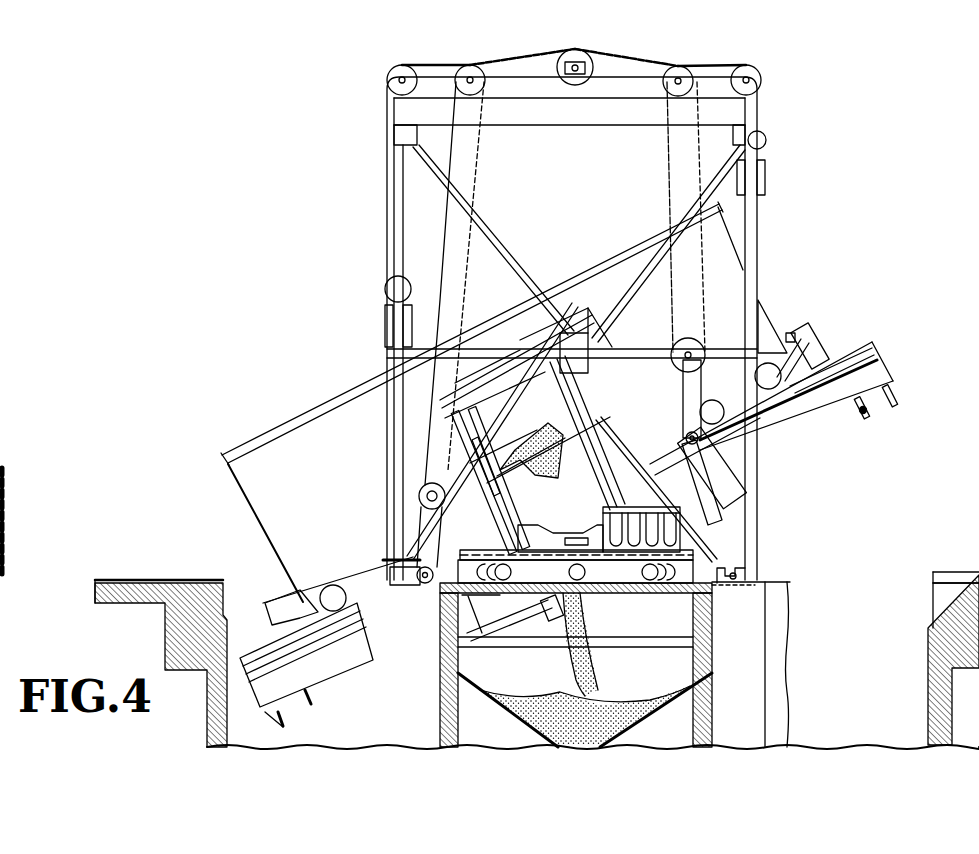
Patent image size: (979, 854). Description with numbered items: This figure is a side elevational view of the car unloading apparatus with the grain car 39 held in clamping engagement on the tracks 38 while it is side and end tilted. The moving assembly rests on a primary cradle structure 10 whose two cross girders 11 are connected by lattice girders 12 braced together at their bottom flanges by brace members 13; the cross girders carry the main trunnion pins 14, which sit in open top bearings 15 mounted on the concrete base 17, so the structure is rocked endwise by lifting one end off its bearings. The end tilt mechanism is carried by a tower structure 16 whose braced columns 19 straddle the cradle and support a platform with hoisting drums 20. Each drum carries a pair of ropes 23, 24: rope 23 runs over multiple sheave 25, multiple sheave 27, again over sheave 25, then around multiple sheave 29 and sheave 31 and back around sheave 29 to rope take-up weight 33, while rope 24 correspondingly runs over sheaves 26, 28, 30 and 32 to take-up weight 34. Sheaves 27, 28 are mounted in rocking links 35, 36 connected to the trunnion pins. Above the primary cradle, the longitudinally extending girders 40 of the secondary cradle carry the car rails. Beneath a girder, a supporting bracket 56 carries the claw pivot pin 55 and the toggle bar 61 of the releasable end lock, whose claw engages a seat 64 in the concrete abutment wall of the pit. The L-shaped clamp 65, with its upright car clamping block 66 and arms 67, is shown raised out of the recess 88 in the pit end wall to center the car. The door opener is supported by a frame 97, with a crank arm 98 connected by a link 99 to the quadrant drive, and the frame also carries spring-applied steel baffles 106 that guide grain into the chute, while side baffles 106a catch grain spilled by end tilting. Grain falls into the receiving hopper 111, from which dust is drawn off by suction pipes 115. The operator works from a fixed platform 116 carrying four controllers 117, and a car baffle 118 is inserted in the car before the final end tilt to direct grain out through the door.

The primary cradle structure 10 is at (512, 632).
The cross girder 11 is at (735, 485).
The lattice girder 12 is at (533, 628).
The brace member 13 is at (556, 622).
The main trunnion pin 14 is at (432, 585).
The open top bearing 15 is at (422, 583).
The tower structure 16 is at (384, 404).
The concrete base 17 is at (770, 638).
The braced column 19 is at (760, 240).
The hoisting drum 20 is at (581, 53).
The rope 23 is at (540, 60).
The rope 24 is at (622, 60).
The multiple sheave 25 is at (466, 66).
The multiple sheave 26 is at (686, 68).
The multiple sheave 27 is at (420, 490).
The multiple sheave 28 is at (690, 340).
The multiple sheave 29 is at (388, 77).
The multiple sheave 30 is at (762, 75).
The sheave 31 is at (385, 288).
The sheave 32 is at (766, 141).
The rope take-up weight 33 is at (383, 323).
The rope take-up weight 34 is at (766, 177).
The rocking link 35 is at (422, 516).
The rocking link 36 is at (700, 392).
The tracks 38 is at (875, 345).
The grain car 39 is at (278, 435).
The longitudinally extending girder 40 is at (878, 372).
The pin 55 is at (893, 410).
The supporting bracket 56 is at (868, 420).
The toggle bar 61 is at (860, 415).
The seat 64 is at (925, 625).
The L-shaped clamp 65 is at (818, 335).
The car clamping block 66 is at (806, 328).
The arm 67 is at (792, 378).
The recess 88 is at (938, 603).
The frame 97 is at (470, 459).
The crank arm 98 is at (466, 437).
The link 99 is at (500, 470).
The steel baffle 106 is at (560, 538).
The side baffle 106a is at (686, 432).
The receiving hopper 111 is at (658, 675).
The suction pipe 115 is at (597, 586).
The fixed platform 116 is at (688, 560).
The controller 117 is at (612, 515).
The car baffle 118 is at (535, 432).